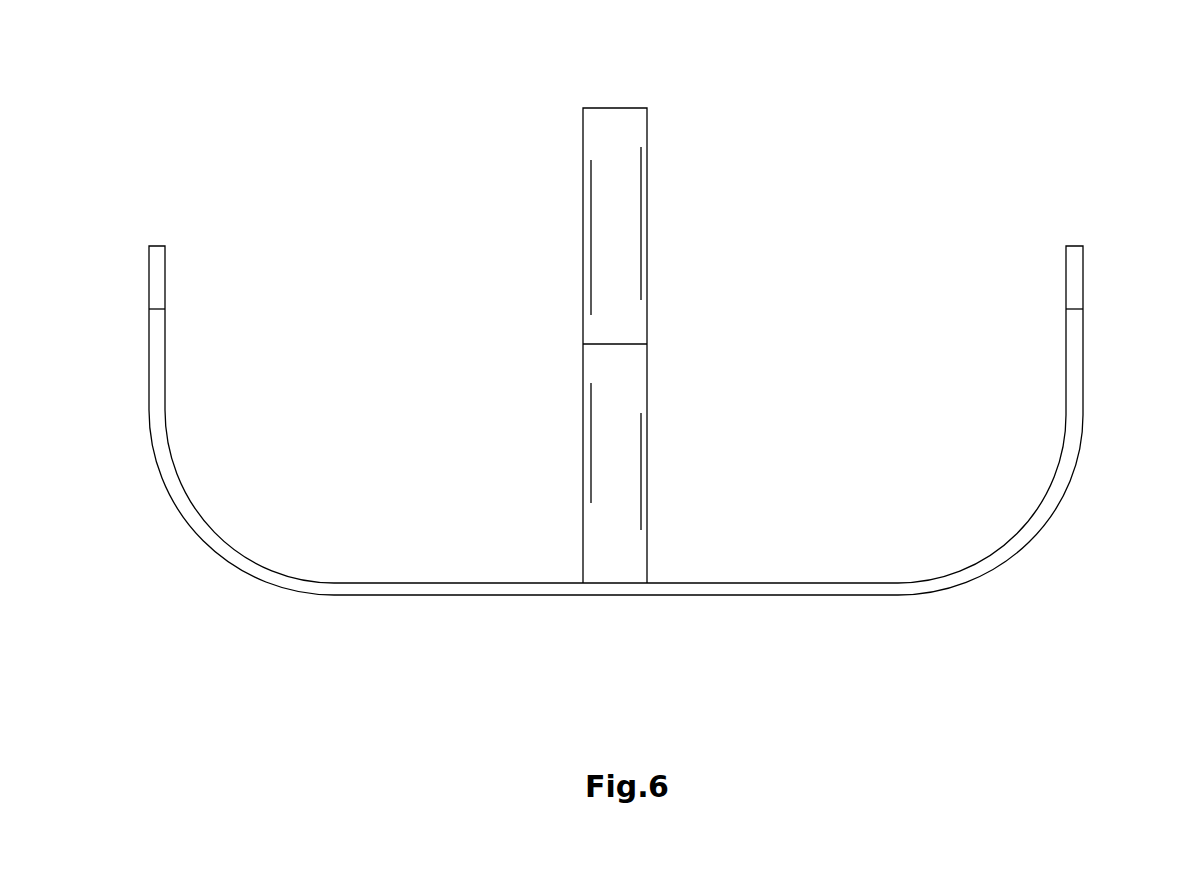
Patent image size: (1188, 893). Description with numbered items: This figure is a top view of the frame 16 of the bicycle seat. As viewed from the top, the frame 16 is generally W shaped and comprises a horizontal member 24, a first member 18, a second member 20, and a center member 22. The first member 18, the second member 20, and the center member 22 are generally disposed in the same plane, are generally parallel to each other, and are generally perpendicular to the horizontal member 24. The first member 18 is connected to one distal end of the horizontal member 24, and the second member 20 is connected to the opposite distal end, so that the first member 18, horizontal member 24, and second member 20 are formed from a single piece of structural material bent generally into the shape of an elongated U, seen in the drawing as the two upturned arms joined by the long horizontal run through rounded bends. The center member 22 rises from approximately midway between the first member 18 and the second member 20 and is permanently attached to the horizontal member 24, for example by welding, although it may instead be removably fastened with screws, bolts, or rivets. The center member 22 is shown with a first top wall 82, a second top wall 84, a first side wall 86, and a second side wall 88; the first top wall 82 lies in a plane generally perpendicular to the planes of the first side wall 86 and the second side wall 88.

The frame 16 is at (1010, 146).
The first member 18 is at (149, 326).
The second member 20 is at (1083, 327).
The center member 22 is at (569, 209).
The horizontal member 24 is at (613, 600).
The first top wall 82 is at (620, 458).
The second top wall 84 is at (617, 136).
The first side wall 86 is at (583, 302).
The second side wall 88 is at (647, 316).